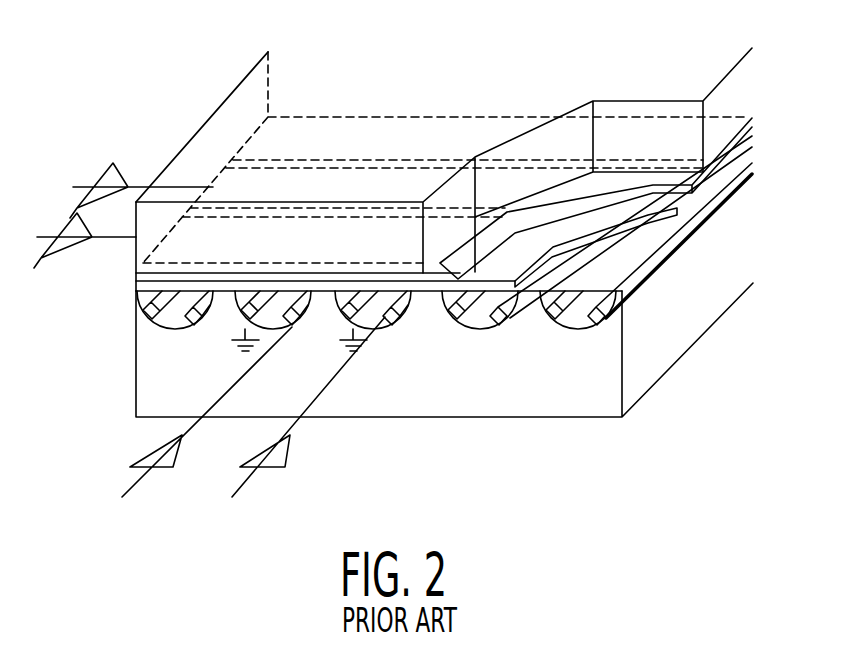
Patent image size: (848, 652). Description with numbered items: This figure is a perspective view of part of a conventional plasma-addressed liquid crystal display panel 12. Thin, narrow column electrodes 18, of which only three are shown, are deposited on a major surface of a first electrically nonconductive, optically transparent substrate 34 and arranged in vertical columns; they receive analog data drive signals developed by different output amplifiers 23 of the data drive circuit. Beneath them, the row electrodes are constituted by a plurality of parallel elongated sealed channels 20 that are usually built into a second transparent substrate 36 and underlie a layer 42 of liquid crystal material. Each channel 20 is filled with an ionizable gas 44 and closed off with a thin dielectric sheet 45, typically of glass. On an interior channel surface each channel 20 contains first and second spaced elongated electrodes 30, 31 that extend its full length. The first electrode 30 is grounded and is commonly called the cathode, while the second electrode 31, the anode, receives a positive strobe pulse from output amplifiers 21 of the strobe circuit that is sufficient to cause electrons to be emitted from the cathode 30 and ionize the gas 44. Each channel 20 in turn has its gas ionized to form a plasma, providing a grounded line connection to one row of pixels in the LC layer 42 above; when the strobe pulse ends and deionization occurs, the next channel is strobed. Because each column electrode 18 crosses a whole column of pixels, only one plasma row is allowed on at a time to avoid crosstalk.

The display panel 12 is at (181, 104).
The first substrate 34 is at (247, 83).
The column electrodes 18 is at (317, 130).
The output amplifiers 23 is at (116, 163).
The second substrate 36 is at (673, 365).
The channels 20 is at (173, 320).
The first electrode 30 is at (232, 316).
The second electrode 31 is at (297, 313).
The ionizable gas 44 is at (383, 317).
The layer of LC material 42 is at (700, 197).
The thin dielectric sheet 45 is at (700, 216).
The output amplifiers 21 is at (153, 450).